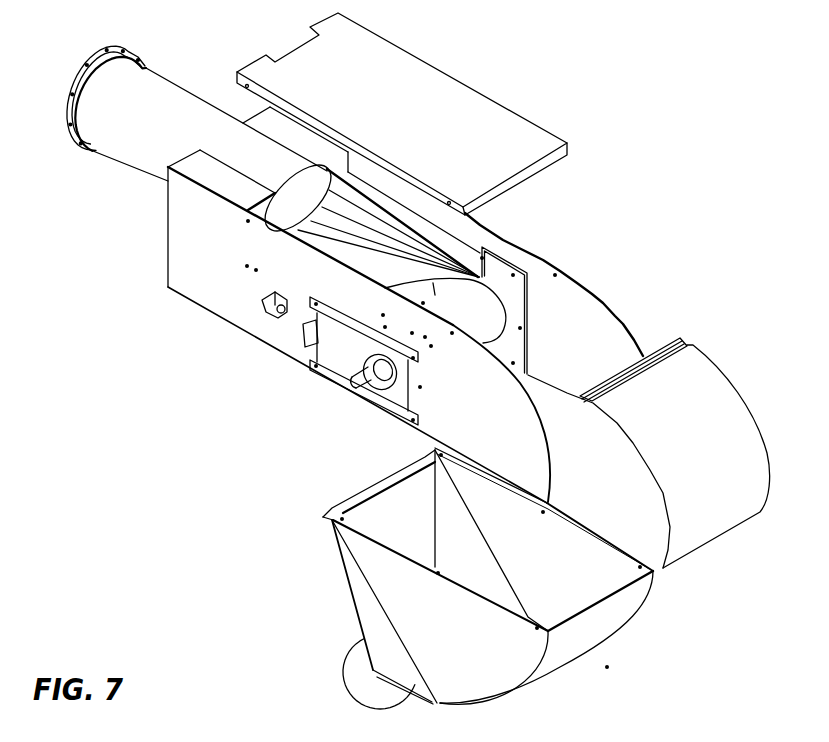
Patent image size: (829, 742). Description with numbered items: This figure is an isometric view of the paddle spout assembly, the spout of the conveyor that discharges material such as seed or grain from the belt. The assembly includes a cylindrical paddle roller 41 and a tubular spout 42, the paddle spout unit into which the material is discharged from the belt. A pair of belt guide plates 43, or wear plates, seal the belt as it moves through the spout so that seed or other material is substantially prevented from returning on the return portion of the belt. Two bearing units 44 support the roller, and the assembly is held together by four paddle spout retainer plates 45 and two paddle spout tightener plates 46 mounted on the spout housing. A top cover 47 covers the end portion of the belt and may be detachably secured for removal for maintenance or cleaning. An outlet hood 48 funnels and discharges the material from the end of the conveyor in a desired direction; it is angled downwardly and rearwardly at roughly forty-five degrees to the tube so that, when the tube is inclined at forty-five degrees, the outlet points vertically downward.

The cylindrical roller 41 is at (492, 312).
The tubular spout 42 is at (138, 92).
The belt guide plate 43 is at (521, 283).
The bearing unit 44 is at (378, 380).
The paddle spout retainer plate 45 is at (332, 373).
The paddle spout tightener plate 46 is at (305, 338).
The top cover 47 is at (508, 130).
The outlet hood 48 is at (605, 618).